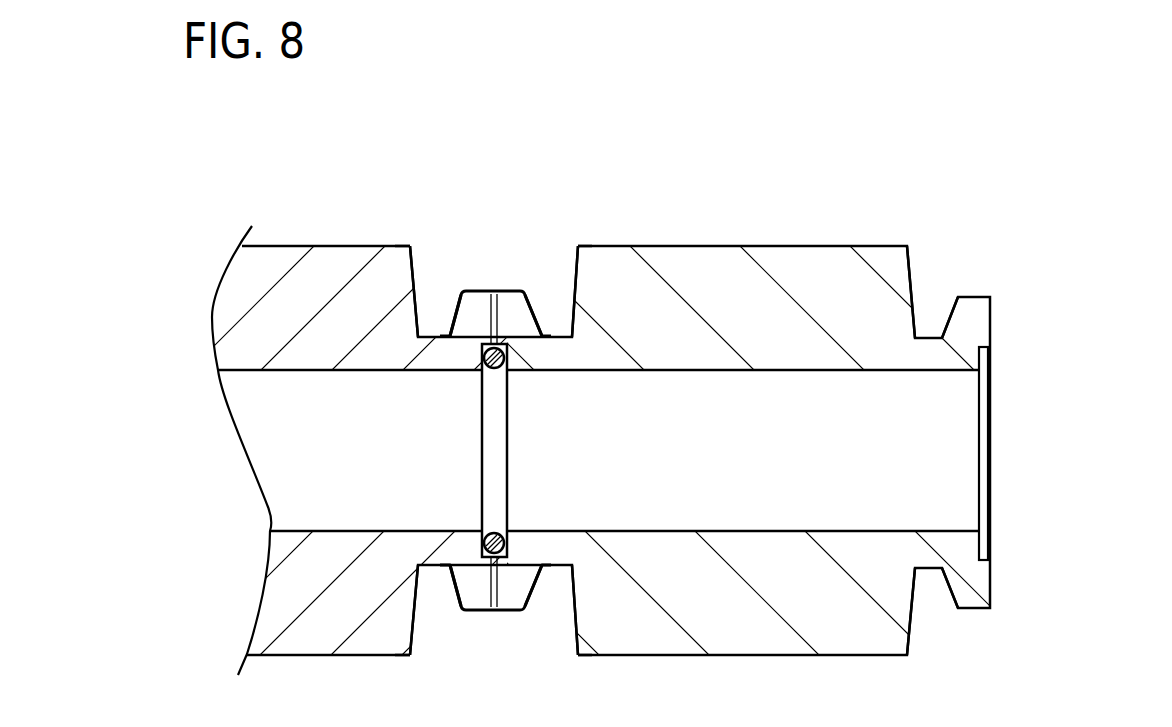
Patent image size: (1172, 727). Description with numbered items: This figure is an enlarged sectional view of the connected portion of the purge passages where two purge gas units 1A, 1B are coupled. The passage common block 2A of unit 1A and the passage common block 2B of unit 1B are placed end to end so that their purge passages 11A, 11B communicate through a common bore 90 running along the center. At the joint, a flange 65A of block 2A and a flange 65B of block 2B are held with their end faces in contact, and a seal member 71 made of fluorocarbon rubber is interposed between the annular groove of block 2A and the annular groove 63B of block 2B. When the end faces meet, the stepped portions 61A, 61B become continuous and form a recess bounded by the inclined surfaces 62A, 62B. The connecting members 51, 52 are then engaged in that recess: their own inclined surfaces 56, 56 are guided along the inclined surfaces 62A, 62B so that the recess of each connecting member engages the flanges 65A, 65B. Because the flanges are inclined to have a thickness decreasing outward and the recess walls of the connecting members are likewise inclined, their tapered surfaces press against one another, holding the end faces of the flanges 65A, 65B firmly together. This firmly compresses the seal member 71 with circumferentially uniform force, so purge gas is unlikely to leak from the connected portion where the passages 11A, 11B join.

The purge gas unit 1A is at (586, 400).
The purge gas unit 1B is at (586, 400).
The passage common block 2A is at (300, 263).
The passage common block 2B is at (800, 263).
The purge passage 11A is at (268, 371).
The purge passage 11B is at (932, 400).
The fluid passage 90 is at (596, 445).
The connecting member 51 is at (763, 372).
The connecting member 52 is at (503, 643).
The inclined surface 56 is at (417, 292).
The stepped portion 61A is at (432, 300).
The stepped portion 61B is at (569, 290).
The inclined surface 62A is at (422, 268).
The inclined surface 62B is at (572, 252).
The annular groove 63B is at (983, 357).
The flange 65A is at (473, 305).
The flange 65B is at (527, 300).
The seal member 71 is at (508, 360).